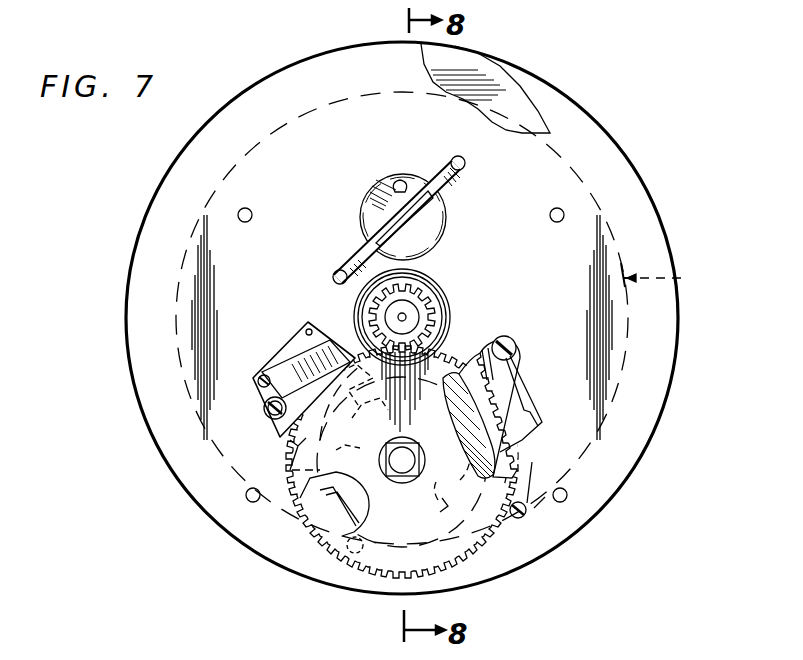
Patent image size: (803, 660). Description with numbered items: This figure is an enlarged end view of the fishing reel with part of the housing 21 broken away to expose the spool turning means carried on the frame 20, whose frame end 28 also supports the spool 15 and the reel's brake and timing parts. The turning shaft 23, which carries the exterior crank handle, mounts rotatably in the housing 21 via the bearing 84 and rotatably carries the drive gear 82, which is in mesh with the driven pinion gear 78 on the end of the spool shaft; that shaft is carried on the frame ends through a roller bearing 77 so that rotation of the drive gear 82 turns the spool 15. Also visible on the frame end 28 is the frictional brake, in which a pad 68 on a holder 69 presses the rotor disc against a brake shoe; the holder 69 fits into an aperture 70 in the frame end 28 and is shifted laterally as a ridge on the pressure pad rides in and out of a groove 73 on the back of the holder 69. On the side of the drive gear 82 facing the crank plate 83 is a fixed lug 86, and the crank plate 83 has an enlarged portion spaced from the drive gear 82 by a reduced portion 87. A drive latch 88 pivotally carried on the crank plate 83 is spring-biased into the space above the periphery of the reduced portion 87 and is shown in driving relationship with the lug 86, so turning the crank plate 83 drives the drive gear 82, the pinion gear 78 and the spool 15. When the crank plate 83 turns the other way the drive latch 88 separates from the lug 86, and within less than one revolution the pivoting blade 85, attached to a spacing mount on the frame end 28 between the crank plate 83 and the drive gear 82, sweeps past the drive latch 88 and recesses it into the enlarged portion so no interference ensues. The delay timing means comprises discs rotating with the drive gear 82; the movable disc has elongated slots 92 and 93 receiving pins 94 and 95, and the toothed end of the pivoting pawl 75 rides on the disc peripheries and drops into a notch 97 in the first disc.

The spool 15 is at (671, 276).
The frame 20 is at (668, 206).
The housing 21 is at (530, 96).
The turning shaft 23 is at (402, 462).
The frame end 28 is at (624, 152).
The pad 68 is at (442, 254).
The holder 69 is at (435, 232).
The aperture 70 is at (398, 180).
The groove 73 is at (436, 205).
The pivoting pawl 75 is at (522, 420).
The roller bearing 77 is at (436, 317).
The driven pinion gear 78 is at (432, 326).
The drive gear 82 is at (522, 504).
The crank plate 83 is at (470, 538).
The bearing 84 is at (300, 330).
The pivoting blade 85 is at (318, 372).
The fixed lug 86 is at (290, 500).
The reduced portion 87 is at (510, 452).
The drive latch 88 is at (322, 525).
The elongated slot 92 is at (330, 462).
The elongated slot 93 is at (440, 524).
The pin 94 is at (363, 407).
The pin 95 is at (445, 486).
The notch 97 is at (288, 440).